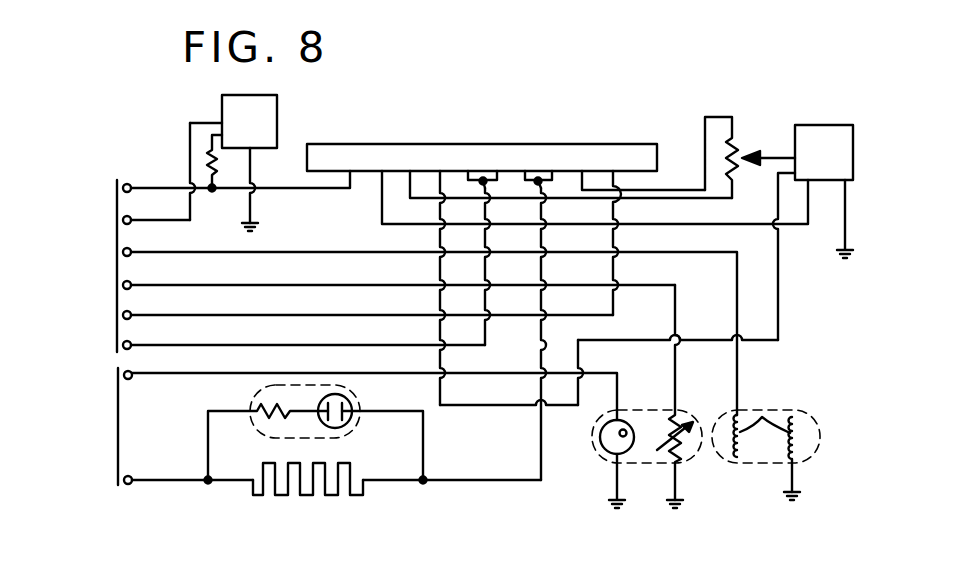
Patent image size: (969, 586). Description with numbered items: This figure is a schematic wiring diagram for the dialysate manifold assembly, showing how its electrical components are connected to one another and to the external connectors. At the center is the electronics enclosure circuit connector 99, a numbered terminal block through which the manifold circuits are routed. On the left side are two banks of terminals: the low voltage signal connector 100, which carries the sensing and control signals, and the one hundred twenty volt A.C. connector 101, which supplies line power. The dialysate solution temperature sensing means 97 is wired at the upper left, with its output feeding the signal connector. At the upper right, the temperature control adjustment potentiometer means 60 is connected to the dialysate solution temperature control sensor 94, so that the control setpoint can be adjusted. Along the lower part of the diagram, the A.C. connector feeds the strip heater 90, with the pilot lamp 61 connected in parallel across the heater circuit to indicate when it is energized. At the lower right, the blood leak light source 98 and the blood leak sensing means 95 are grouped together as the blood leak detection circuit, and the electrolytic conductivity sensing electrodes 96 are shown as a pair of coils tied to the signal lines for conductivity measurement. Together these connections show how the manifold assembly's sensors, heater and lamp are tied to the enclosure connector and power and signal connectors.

The temperature control adjustment potentiometer means 60 is at (720, 117).
The pilot lamp 61 is at (357, 393).
The strip heater 90 is at (332, 495).
The dialysate solution temperature control sensor 94 is at (853, 141).
The blood leak sensing means 95 is at (663, 412).
The electrolytic conductivity sensing electrodes 96 is at (762, 417).
The dialysate solution temperature sensing means 97 is at (277, 115).
The blood leak light source 98 is at (630, 420).
The electronics enclosure circuit connector 99 is at (517, 143).
The low voltage signal connector 100 is at (115, 240).
The 120 volt A.C. connector 101 is at (116, 410).